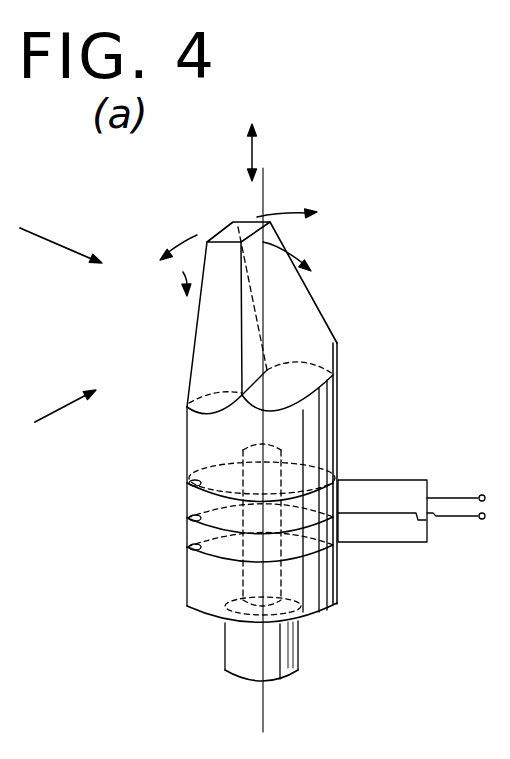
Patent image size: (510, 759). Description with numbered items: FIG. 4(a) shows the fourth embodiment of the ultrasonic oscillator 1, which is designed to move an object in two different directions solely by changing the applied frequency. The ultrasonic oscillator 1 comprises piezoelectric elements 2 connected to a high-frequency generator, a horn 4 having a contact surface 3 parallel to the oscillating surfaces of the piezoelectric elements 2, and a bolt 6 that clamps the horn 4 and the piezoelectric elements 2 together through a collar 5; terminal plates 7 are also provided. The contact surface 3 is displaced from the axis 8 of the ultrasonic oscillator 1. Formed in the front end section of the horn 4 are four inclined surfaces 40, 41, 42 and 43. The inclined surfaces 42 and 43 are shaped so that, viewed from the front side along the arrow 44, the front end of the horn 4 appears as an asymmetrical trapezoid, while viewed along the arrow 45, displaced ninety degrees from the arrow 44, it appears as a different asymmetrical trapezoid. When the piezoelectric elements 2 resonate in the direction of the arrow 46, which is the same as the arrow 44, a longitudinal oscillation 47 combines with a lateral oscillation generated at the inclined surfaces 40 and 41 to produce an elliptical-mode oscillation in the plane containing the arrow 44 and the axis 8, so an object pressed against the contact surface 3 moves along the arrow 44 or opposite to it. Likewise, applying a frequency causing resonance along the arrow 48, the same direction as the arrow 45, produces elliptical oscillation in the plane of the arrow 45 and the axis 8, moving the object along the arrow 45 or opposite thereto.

The ultrasonic oscillator 1 is at (362, 393).
The piezoelectric elements 2 is at (338, 468).
The contact surface 3 is at (229, 219).
The horn 4 is at (340, 433).
The collar 5 is at (335, 597).
The bolt 6 is at (299, 648).
The terminal plates 7 is at (187, 484).
The axis 8 is at (263, 704).
The inclined surface 40 is at (196, 402).
The inclined surface 41 is at (310, 315).
The inclined surface 42 is at (341, 373).
The inclined surface 43 is at (200, 338).
The arrow 44 is at (46, 414).
The arrow 45 is at (43, 232).
The arrow 46 is at (290, 204).
The longitudinal oscillation 47 is at (248, 154).
The arrow 48 is at (297, 249).